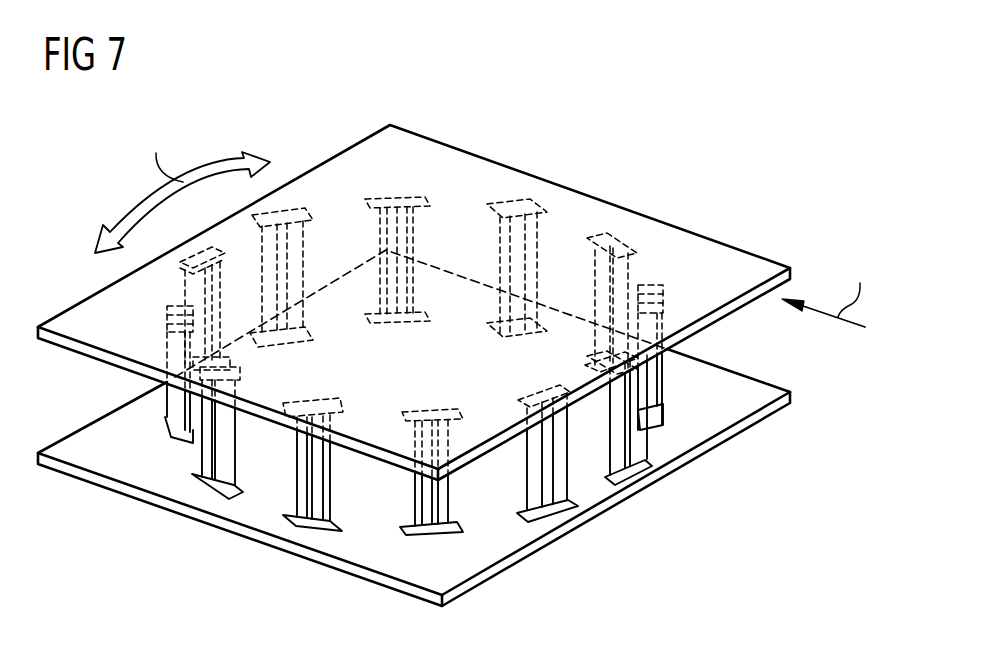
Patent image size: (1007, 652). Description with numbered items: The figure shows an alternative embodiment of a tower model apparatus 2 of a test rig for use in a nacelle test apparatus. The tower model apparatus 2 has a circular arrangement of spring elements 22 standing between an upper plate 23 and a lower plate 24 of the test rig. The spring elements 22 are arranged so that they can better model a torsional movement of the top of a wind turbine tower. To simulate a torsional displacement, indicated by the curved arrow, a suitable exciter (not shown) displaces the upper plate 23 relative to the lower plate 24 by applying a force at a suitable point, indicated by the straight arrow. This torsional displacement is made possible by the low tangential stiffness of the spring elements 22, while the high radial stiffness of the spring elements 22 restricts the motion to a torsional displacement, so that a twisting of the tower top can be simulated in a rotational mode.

The tower model apparatus 2 is at (645, 113).
The spring elements 22 is at (318, 475).
The upper plate 23 is at (682, 238).
The lower plate 24 is at (483, 560).